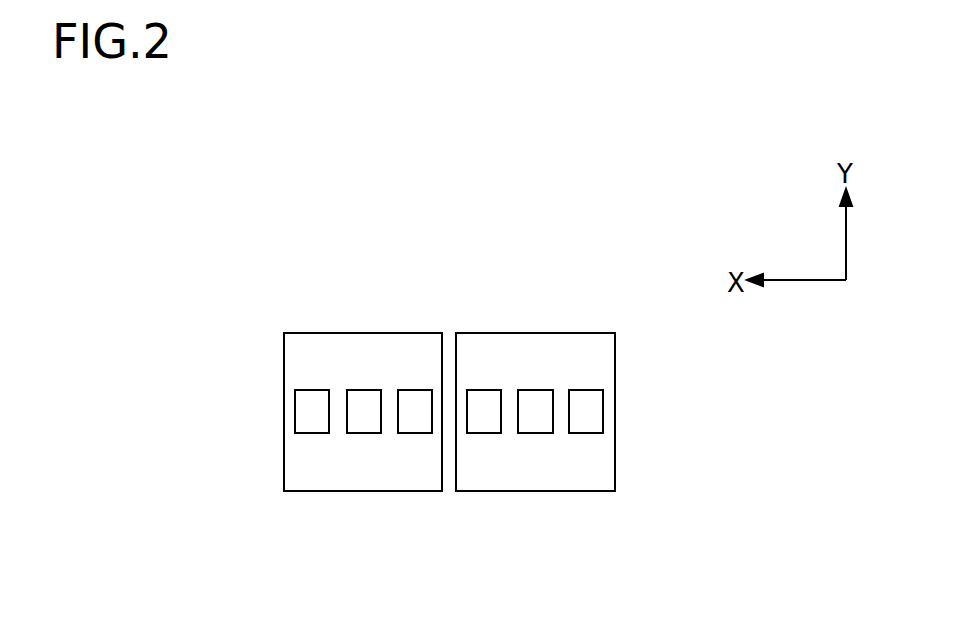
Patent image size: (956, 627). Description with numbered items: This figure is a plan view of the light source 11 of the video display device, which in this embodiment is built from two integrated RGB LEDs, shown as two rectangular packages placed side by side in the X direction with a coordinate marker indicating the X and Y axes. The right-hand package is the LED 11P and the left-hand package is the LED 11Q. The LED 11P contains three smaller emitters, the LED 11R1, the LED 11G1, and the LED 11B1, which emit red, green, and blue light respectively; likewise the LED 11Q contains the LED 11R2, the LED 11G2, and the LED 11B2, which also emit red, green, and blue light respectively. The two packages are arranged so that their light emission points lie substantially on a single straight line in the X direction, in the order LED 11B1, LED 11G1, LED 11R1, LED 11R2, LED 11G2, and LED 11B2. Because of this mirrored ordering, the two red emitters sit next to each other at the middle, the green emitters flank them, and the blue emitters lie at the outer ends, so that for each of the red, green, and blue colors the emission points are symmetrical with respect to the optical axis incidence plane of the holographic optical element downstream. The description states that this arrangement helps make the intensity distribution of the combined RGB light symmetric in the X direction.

The light source 11 is at (220, 230).
The LED 11Q is at (357, 317).
The LED 11P is at (530, 317).
The LED 11B2 is at (307, 427).
The LED 11G2 is at (360, 427).
The LED 11R2 is at (414, 427).
The LED 11R1 is at (483, 427).
The LED 11G1 is at (536, 427).
The LED 11B1 is at (589, 427).